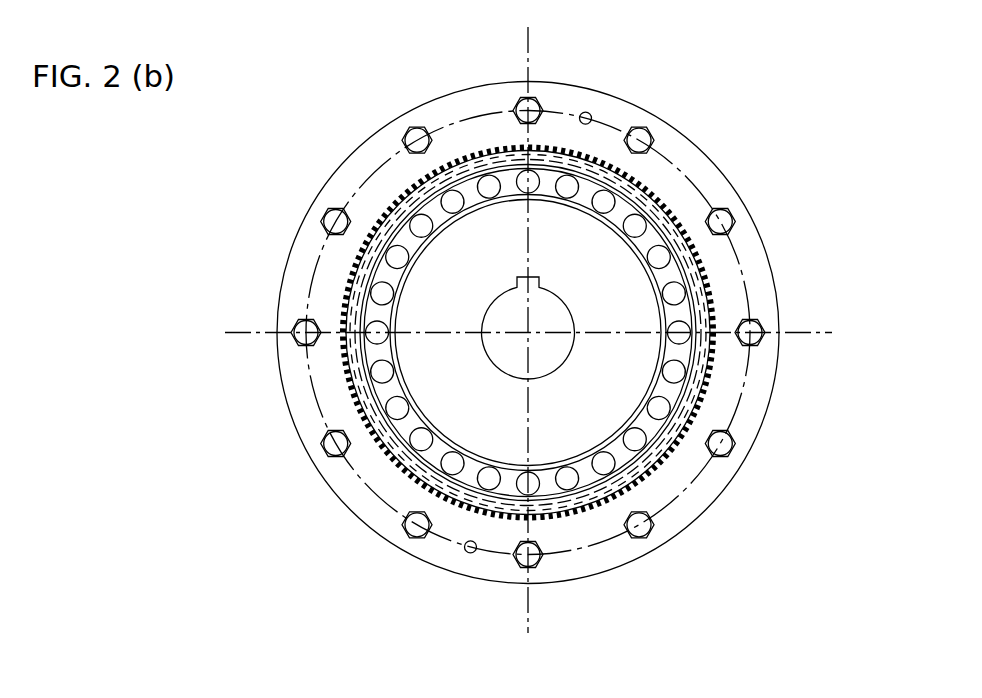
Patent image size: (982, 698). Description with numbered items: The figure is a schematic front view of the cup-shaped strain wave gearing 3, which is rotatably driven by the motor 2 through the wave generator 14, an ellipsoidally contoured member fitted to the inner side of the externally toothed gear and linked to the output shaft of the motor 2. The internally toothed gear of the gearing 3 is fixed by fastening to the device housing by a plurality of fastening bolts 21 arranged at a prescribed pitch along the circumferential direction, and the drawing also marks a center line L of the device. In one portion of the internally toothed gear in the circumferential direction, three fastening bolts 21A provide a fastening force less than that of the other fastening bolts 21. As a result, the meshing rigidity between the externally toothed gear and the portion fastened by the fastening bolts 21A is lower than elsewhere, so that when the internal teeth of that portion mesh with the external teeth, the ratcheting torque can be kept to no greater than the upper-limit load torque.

The motor 2 is at (770, 232).
The cup-shaped strain wave gearing 3 is at (750, 106).
The wave generator 14 is at (630, 388).
The fastening bolts 21 is at (639, 140).
The fastening bolts 21A is at (336, 221).
The center axis line L is at (534, 50).